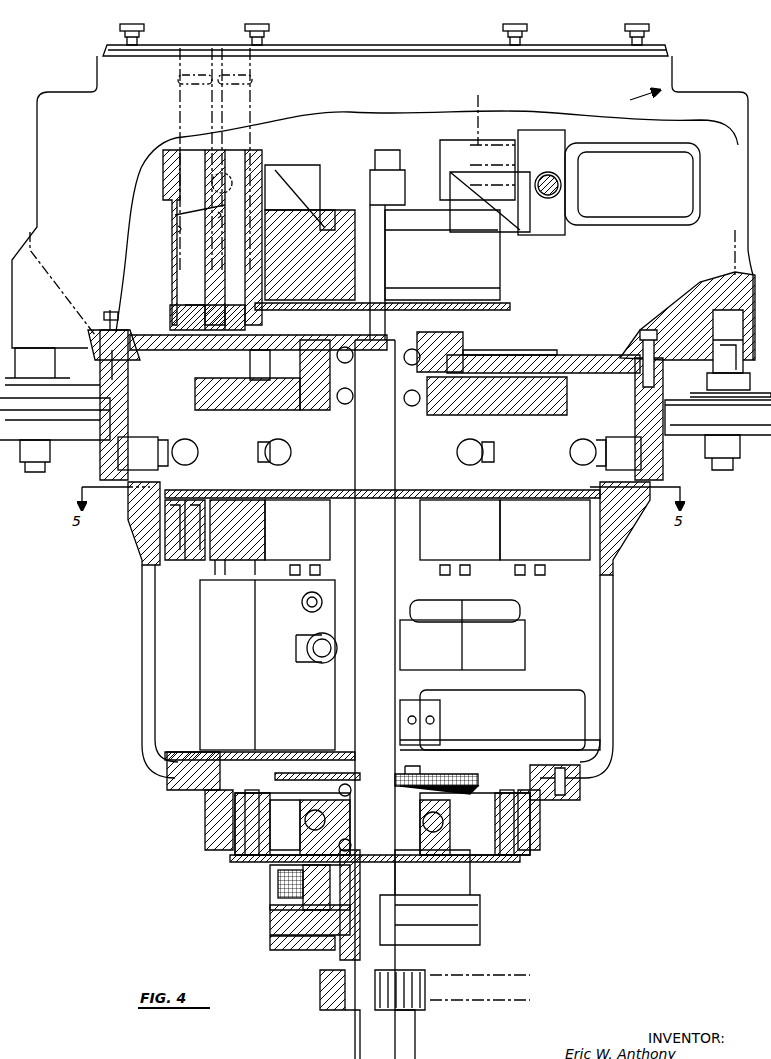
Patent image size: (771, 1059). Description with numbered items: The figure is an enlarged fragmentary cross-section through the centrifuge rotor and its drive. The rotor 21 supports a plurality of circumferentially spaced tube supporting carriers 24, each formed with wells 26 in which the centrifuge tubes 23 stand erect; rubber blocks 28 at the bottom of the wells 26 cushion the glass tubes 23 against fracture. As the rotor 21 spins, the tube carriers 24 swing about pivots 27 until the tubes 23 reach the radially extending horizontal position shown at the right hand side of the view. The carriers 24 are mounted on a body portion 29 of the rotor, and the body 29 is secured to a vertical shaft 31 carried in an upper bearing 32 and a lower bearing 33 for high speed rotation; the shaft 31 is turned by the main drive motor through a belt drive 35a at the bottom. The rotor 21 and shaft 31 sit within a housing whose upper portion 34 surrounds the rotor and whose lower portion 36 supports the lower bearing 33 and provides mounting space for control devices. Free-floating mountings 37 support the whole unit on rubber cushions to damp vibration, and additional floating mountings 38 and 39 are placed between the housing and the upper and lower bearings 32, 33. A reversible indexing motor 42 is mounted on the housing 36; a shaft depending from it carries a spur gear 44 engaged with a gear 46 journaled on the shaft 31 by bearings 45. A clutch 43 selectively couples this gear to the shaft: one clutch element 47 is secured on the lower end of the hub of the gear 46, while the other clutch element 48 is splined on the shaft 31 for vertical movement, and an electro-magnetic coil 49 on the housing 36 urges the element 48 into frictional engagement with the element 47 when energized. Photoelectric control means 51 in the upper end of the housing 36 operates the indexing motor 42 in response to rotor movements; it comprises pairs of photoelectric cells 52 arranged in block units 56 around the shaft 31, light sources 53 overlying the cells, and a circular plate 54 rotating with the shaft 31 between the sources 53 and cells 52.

The rotor 21 is at (672, 128).
The centrifuge tubes 23 is at (228, 40).
The tube supporting carriers 24 is at (176, 250).
The wells 26 is at (210, 210).
The pivots 27 is at (236, 170).
The rubber blocks 28 is at (180, 320).
The body portion 29 is at (432, 261).
The shaft 31 is at (390, 591).
The upper bearing 32 is at (415, 405).
The lower bearing 33 is at (300, 812).
The upper housing portion 34 is at (725, 180).
The belt drive 35a is at (495, 1005).
The lower housing portion 36 is at (625, 540).
The free-floating mountings 37 is at (50, 445).
The floating mounting 38 is at (218, 375).
The floating mounting 39 is at (510, 800).
The indexing drive motor 42 is at (496, 653).
The clutch means 43 is at (490, 920).
The spur gear 44 is at (470, 778).
The bearings 45 is at (345, 770).
The gear 46 is at (295, 760).
The clutch element 47 is at (270, 922).
The clutch element 48 is at (270, 945).
The electro-magnetic coil 49 is at (272, 882).
The photoelectric control means 51 is at (565, 435).
The photoelectric cells 52 is at (165, 540).
The light sources 53 is at (194, 445).
The circular plate 54 is at (305, 490).
The block units 56 is at (258, 520).